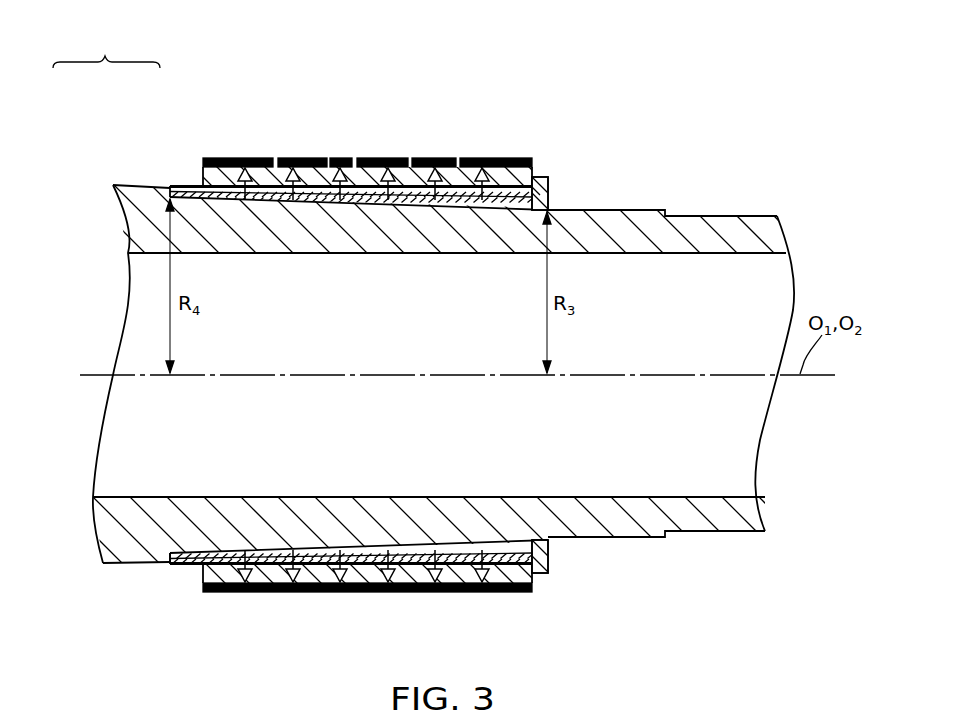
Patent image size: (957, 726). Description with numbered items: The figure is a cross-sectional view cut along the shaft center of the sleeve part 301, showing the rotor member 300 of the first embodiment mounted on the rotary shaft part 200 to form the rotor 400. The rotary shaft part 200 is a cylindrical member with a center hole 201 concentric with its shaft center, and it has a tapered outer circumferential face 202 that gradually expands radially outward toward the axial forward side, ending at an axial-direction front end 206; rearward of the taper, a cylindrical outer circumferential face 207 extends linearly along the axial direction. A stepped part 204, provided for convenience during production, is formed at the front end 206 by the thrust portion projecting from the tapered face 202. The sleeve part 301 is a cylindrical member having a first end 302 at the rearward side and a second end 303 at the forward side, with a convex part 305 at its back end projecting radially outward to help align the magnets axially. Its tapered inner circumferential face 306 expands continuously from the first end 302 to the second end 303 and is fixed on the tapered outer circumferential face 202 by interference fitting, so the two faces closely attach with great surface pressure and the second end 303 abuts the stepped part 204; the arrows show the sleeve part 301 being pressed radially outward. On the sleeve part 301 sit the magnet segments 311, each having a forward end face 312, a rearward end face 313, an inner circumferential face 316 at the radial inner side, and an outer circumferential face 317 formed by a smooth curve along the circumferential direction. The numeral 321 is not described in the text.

The rotor 400 is at (106, 49).
The rotary shaft part 200 is at (135, 176).
The rotor member 300 is at (190, 177).
The center hole 201 is at (657, 258).
The tapered outer circumferential face 202 is at (620, 211).
The stepped part 204 is at (174, 552).
The axial-direction front end 206 is at (178, 187).
The outer circumferential face 207 is at (735, 216).
The sleeve part 301 is at (561, 188).
The first end 302 is at (549, 563).
The second end 303 is at (167, 566).
The convex part 305 is at (536, 592).
The tapered inner circumferential face 306 is at (360, 203).
The magnet segment 311 is at (275, 172).
The end face 312 is at (202, 183).
The end face 313 is at (329, 170).
The inner circumferential face 316 is at (456, 205).
The outer circumferential face 317 is at (509, 160).
The outer electrode segment 321 is at (251, 146).